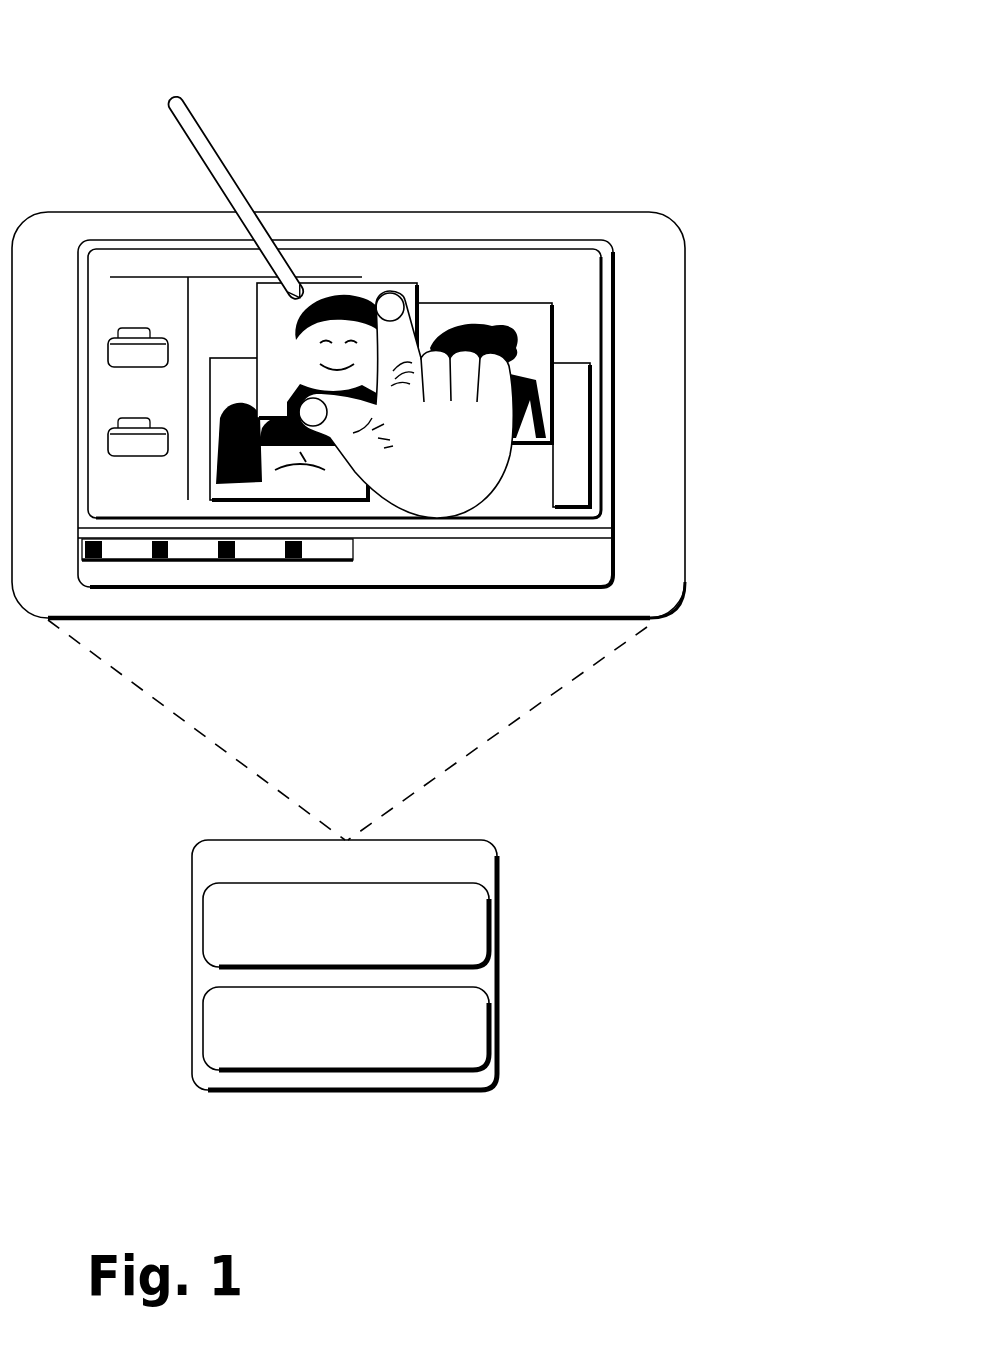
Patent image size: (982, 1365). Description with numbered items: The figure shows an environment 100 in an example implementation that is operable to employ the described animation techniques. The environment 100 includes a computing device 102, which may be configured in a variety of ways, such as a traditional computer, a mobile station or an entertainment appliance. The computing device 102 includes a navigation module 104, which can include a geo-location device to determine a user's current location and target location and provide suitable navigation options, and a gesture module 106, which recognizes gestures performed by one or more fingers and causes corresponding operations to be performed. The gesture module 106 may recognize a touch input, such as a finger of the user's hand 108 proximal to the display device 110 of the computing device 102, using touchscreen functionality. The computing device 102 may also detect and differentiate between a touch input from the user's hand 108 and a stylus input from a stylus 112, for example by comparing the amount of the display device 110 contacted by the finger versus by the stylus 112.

The environment 100 is at (818, 44).
The computing device 102 is at (348, 651).
The navigation module 104 is at (368, 944).
The gesture module 106 is at (370, 1049).
The user's hand 108 is at (467, 496).
The display device 110 is at (345, 413).
The stylus 112 is at (177, 93).